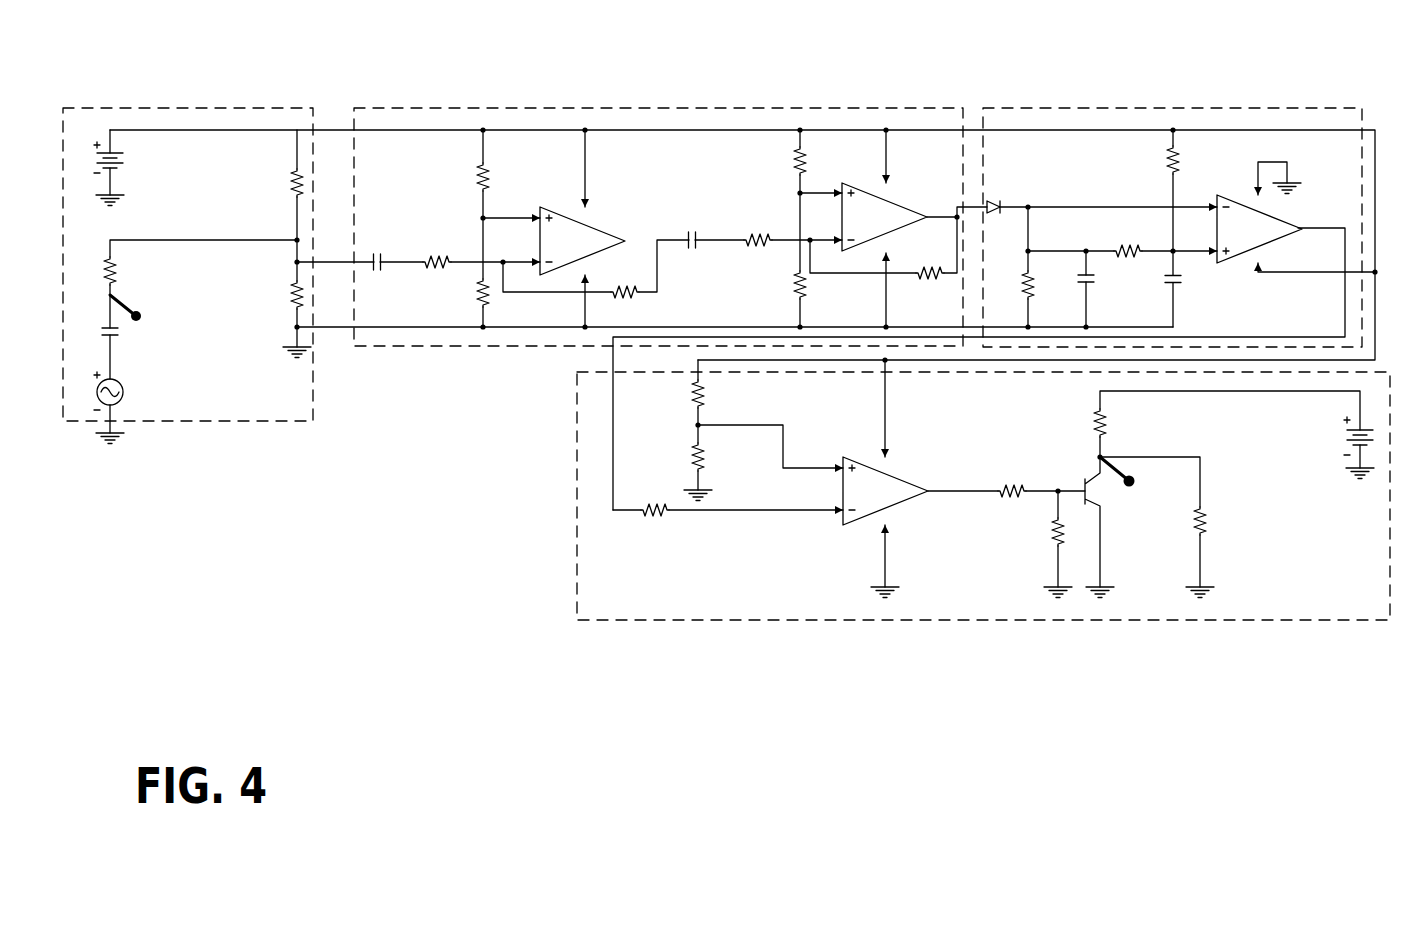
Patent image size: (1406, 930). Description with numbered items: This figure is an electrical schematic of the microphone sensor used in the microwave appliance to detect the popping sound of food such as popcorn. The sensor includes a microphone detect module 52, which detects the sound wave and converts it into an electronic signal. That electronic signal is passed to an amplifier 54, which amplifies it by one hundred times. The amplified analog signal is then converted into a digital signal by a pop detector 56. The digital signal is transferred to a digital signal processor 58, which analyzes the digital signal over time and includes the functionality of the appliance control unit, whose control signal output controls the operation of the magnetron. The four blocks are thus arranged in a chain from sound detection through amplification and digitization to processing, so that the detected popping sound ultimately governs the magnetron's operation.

The microphone detect module 52 is at (212, 108).
The amplifier 54 is at (678, 108).
The pop detector 56 is at (1138, 108).
The digital signal processor 58 is at (1135, 620).